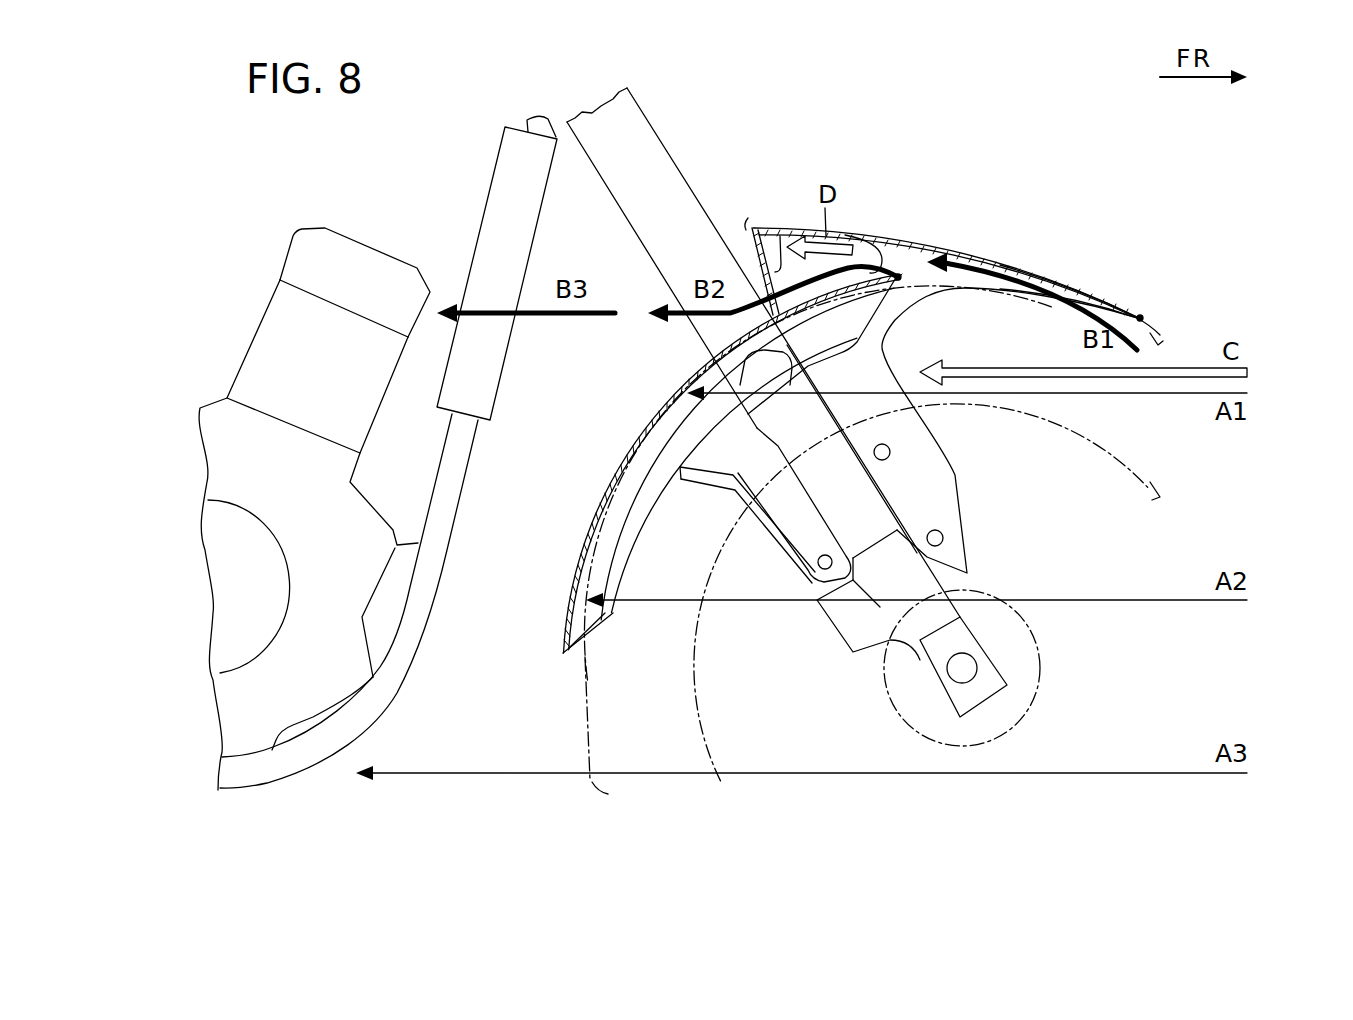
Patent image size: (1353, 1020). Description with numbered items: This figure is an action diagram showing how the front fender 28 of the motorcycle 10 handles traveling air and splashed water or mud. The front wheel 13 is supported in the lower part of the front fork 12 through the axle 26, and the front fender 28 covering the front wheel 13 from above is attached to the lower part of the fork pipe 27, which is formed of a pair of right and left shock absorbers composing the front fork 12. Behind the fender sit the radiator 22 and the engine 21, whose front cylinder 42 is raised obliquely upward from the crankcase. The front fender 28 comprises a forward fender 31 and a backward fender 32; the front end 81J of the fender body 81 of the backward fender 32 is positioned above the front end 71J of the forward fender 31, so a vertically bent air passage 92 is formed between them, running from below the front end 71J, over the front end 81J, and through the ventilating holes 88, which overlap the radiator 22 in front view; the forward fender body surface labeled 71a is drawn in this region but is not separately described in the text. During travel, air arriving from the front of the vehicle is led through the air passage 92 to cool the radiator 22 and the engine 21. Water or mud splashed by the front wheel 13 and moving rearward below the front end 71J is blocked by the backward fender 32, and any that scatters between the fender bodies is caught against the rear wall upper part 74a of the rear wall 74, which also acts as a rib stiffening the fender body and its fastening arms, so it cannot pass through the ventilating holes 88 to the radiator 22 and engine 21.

The motorcycle 10 is at (210, 220).
The front fork 12 is at (660, 118).
The front wheel 13 is at (596, 703).
The engine 21 is at (233, 366).
The radiator 22 is at (484, 213).
The axle 26 is at (970, 683).
The fork pipe 27 is at (853, 652).
The front fender 28 is at (1024, 218).
The forward fender 31 is at (1095, 274).
The backward fender 32 is at (565, 560).
The front cylinder 42 is at (380, 242).
The inner surface of air guide 71a is at (944, 238).
The front end of the fender body of the forward fender 71J is at (1143, 318).
The rear wall 74 is at (751, 226).
The rear wall upper part 74a is at (756, 250).
The fender body of the backward fender 81 is at (608, 468).
The front end of the fender body of the backward fender 81J is at (899, 270).
The ventilating holes 88 is at (781, 262).
The air passage 92 is at (880, 250).